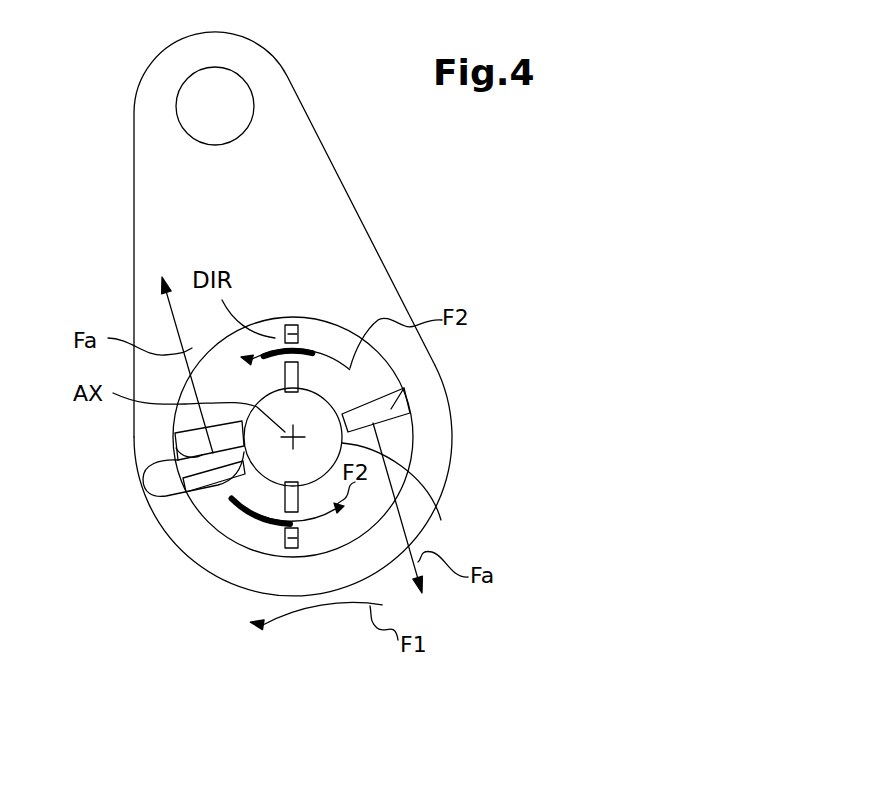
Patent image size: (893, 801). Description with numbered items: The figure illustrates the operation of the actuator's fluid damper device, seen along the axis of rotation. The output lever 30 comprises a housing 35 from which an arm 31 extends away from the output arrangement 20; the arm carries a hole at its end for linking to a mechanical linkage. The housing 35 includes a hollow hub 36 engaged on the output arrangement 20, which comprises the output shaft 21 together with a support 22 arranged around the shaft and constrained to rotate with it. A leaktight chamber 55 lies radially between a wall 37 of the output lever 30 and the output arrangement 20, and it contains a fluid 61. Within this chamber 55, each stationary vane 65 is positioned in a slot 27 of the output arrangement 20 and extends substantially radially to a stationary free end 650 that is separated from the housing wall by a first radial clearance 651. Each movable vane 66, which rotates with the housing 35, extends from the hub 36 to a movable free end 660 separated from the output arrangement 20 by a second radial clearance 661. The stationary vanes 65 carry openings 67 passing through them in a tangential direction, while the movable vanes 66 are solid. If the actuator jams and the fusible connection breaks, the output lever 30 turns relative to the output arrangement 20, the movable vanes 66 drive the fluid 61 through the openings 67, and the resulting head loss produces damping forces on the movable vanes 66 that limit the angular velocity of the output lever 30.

The output lever 30 is at (284, 222).
The arm 31 is at (308, 186).
The housing 35 is at (430, 405).
The output arrangement 20 is at (357, 437).
The output shaft 21 is at (393, 495).
The chamber 55 is at (397, 433).
The fluid 61 is at (372, 382).
The support 22 is at (272, 492).
The slot 27 is at (247, 402).
The hollow hub 36 is at (291, 326).
The wall 37 is at (287, 528).
The stationary vane 65 is at (318, 447).
The stationary free end 650 is at (343, 360).
The first radial clearance 651 is at (340, 456).
The opening 67 is at (322, 330).
The movable vane 66 is at (292, 454).
The movable free end 660 is at (175, 435).
The second radial clearance 661 is at (240, 480).